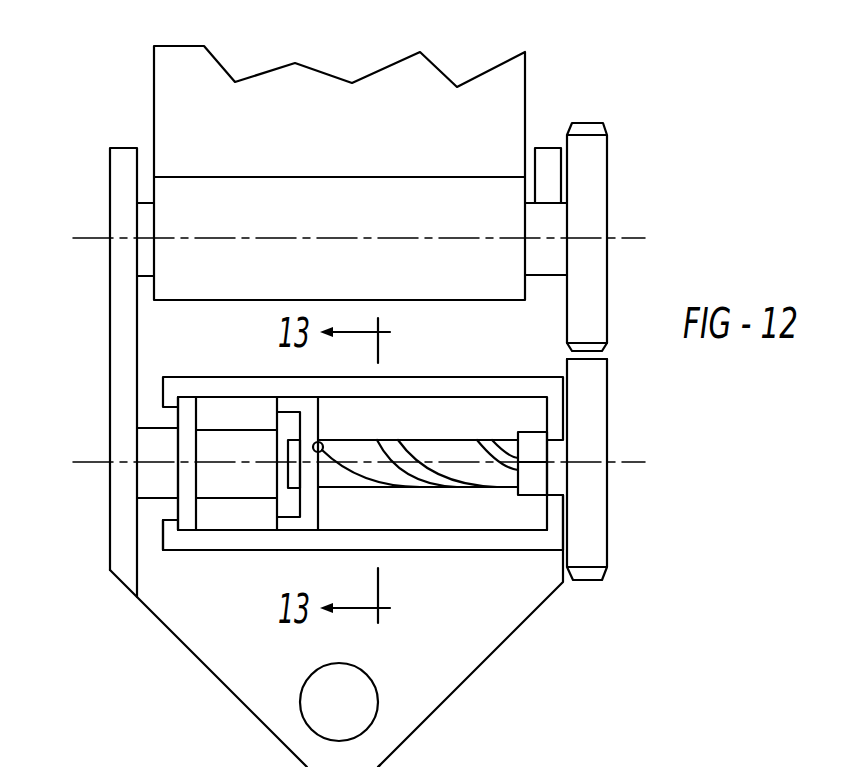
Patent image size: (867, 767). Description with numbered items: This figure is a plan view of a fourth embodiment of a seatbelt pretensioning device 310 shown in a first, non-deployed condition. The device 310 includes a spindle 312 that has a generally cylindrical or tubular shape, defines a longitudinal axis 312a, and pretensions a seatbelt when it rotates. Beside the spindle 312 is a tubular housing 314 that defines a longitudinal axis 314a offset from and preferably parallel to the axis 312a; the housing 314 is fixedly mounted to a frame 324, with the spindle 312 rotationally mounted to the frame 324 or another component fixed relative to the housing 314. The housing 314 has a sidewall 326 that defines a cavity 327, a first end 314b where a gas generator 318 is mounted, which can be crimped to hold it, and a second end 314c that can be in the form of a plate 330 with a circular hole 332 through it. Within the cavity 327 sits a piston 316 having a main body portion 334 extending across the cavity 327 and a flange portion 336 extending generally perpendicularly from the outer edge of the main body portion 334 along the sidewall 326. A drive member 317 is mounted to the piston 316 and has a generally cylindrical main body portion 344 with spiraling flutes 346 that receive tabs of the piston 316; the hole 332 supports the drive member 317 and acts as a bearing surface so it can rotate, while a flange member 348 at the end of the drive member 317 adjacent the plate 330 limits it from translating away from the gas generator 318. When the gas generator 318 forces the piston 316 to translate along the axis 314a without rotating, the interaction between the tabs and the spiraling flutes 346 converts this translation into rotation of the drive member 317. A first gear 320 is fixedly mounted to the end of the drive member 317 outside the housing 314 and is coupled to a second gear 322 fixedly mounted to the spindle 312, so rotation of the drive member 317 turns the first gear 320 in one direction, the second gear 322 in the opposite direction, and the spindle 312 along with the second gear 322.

The seatbelt pretensioning device 310 is at (608, 78).
The spindle 312 is at (485, 200).
The longitudinal axis 312a is at (628, 240).
The second gear 322 is at (595, 297).
The first gear 320 is at (588, 522).
The plate 330 is at (555, 387).
The circular hole 332 is at (540, 485).
The gas generator 318 is at (218, 437).
The flange portion 336 is at (285, 400).
The main body portion 334 is at (305, 418).
The main body portion 344 is at (372, 450).
The drive member 317 is at (460, 453).
The spiraling flutes 346 is at (383, 482).
The cavity 327 is at (433, 515).
The frame 324 is at (485, 603).
The tubular housing 314 is at (238, 540).
The longitudinal axis 314a is at (83, 465).
The first end 314b is at (173, 540).
The second end 314c is at (541, 520).
The piston 316 is at (297, 525).
The flange member 348 is at (537, 477).
The sidewall 326 is at (562, 757).